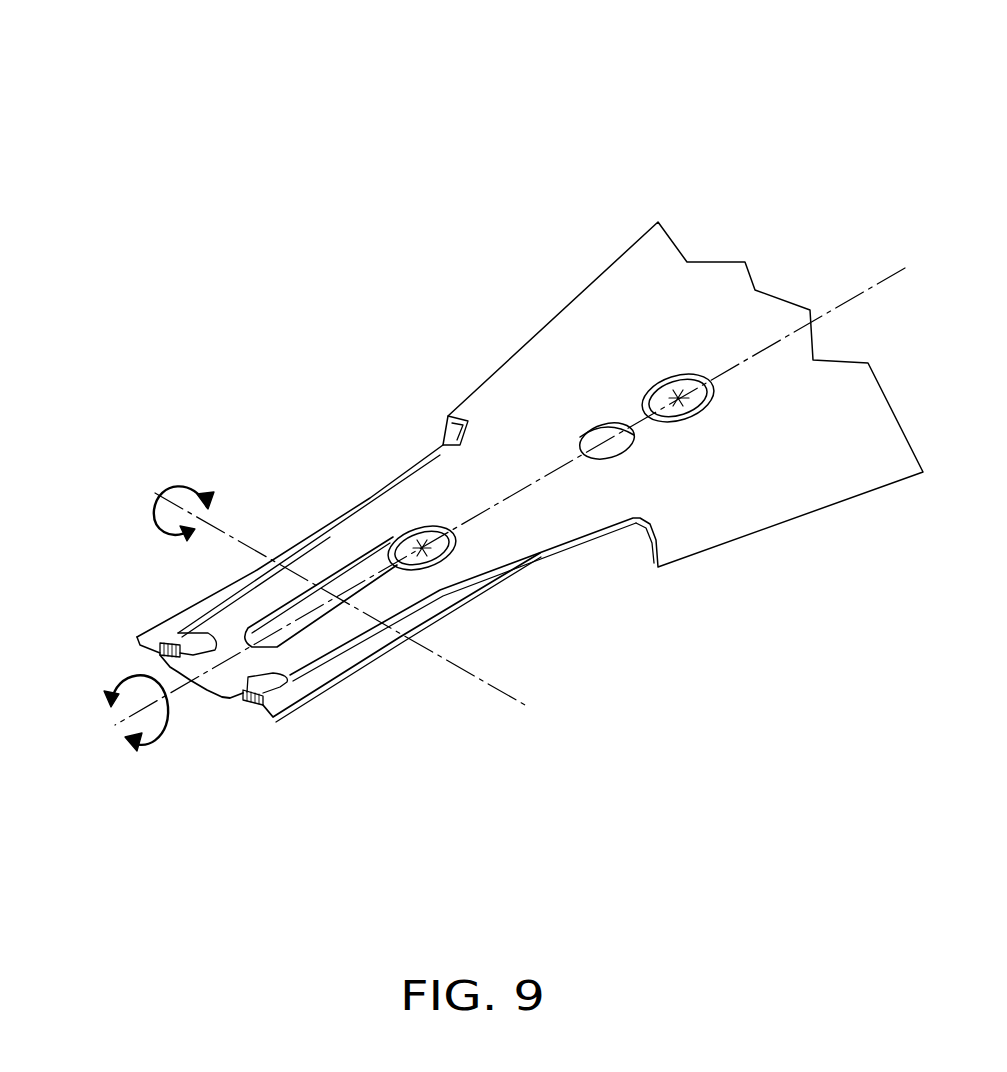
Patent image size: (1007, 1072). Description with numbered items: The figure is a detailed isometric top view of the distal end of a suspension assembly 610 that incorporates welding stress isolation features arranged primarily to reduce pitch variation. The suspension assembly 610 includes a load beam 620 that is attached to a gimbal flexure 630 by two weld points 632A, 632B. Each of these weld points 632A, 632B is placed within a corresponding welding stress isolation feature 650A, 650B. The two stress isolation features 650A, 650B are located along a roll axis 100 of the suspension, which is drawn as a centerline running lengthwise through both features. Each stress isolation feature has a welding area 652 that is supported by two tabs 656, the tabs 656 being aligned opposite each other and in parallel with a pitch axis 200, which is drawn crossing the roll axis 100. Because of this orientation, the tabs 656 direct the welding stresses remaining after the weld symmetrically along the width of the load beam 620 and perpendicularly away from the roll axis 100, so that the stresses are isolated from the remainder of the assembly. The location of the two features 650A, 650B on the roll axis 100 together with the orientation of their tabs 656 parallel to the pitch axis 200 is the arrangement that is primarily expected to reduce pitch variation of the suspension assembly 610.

The suspension assembly 610 is at (530, 441).
The load beam 620 is at (662, 262).
The gimbal flexure 630 is at (218, 673).
The weld point 632A is at (437, 548).
The weld point 632B is at (698, 395).
The welding stress isolation feature 650A is at (408, 571).
The welding stress isolation feature 650B is at (700, 363).
The welding area 652 is at (653, 397).
The tab 656 is at (650, 386).
The roll axis 100 is at (482, 509).
The pitch axis 200 is at (317, 583).